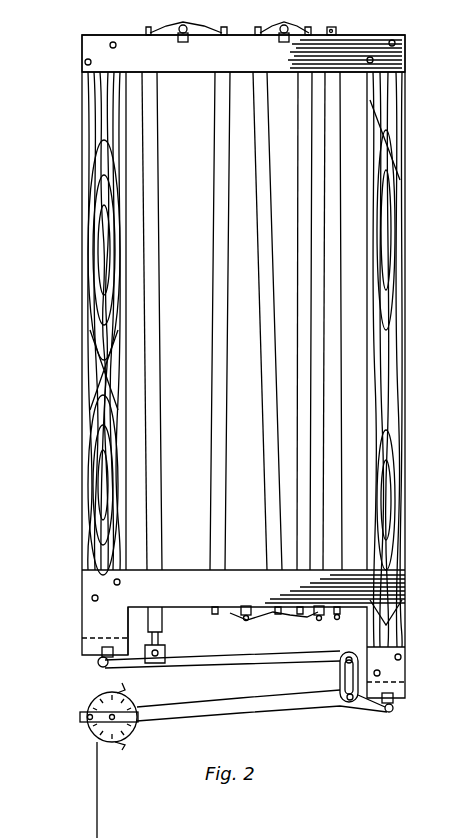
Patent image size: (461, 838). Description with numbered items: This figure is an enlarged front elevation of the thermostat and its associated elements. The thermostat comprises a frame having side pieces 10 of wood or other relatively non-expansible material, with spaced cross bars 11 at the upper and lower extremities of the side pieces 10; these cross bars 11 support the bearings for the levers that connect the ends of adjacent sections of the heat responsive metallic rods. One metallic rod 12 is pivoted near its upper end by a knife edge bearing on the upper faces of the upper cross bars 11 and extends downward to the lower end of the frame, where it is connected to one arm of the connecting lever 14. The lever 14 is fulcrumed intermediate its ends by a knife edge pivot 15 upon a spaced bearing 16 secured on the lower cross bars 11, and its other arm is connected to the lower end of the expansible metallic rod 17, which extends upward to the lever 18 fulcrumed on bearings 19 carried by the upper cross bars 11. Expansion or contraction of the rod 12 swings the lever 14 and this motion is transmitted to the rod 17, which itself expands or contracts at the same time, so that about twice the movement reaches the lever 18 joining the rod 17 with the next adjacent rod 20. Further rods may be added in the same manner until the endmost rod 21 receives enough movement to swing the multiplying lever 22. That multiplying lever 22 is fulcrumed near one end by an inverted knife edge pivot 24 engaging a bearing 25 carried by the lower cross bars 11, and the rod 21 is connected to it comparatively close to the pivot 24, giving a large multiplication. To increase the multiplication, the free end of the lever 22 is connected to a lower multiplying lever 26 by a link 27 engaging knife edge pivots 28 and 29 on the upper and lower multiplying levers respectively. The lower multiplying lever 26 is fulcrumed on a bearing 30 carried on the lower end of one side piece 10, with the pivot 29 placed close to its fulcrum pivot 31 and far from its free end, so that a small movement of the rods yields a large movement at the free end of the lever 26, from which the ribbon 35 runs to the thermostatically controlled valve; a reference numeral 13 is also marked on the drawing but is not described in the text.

The side pieces 10 is at (88, 500).
The cross bars 11 is at (240, 45).
The metallic rod 12 is at (332, 223).
The peg 13 is at (336, 32).
The connecting lever 14 is at (333, 614).
The knife edge pivot 15 is at (310, 623).
The spaced bearing 16 is at (321, 604).
The expansible metallic rod 17 is at (302, 485).
The lever 18 is at (290, 28).
The bearings 19 is at (284, 43).
The next adjacent rod 20 is at (260, 224).
The endmost rod 21 is at (158, 445).
The multiplying lever 22 is at (207, 658).
The inverted knife edge pivot 24 is at (100, 666).
The bearing 25 is at (100, 652).
The lower multiplying lever 26 is at (310, 705).
The link 27 is at (340, 678).
The knife edge pivot 28 is at (343, 656).
The knife edge pivot 29 is at (352, 705).
The bearing 30 is at (395, 700).
The fulcrum pivot 31 is at (388, 713).
The ribbon 35 is at (100, 812).